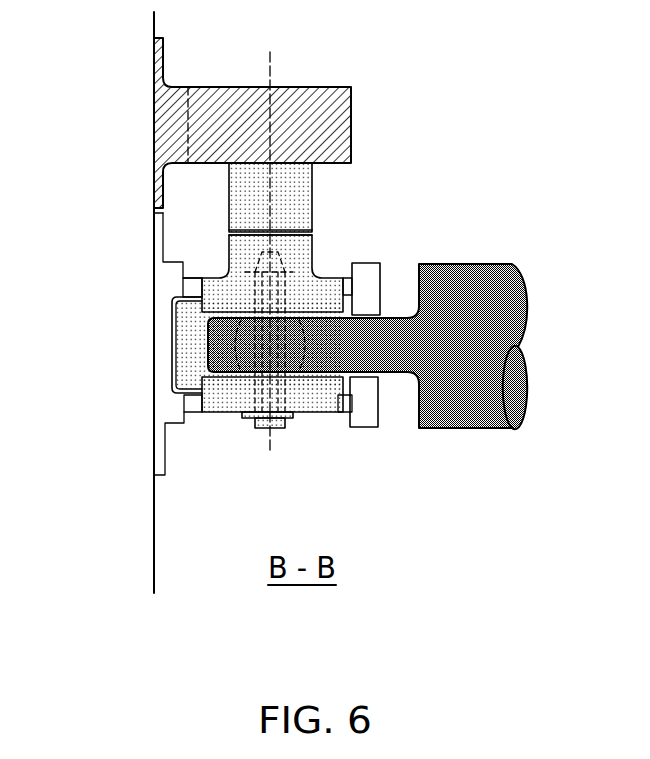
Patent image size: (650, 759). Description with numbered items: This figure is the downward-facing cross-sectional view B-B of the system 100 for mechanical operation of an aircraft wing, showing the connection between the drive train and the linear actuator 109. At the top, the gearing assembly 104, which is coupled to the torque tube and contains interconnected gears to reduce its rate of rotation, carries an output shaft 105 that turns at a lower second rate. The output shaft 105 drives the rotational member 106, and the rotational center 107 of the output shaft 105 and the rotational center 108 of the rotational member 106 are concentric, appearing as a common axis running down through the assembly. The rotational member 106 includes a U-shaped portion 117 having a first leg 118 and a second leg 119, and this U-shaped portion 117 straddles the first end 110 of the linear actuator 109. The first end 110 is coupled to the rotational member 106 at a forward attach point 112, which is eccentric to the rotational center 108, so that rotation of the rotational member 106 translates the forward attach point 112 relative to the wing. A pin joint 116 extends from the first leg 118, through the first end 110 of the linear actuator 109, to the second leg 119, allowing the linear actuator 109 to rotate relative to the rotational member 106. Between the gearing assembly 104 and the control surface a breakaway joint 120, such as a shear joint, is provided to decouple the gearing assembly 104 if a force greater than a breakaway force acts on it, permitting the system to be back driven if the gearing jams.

The system 100 is at (63, 11).
The gearing assembly 104 is at (351, 93).
The output shaft 105 is at (312, 190).
The rotational member 106 is at (325, 272).
The rotational center of the output shaft 107 is at (266, 63).
The rotational center of the rotational member 108 is at (272, 452).
The linear actuator 109 is at (476, 263).
The first end 110 is at (229, 372).
The forward attach point 112 is at (265, 428).
The pin joint 116 is at (240, 293).
The U-shaped portion 117 is at (180, 333).
The first leg 118 is at (353, 263).
The second leg 119 is at (325, 412).
The breakaway joint 120 is at (229, 233).